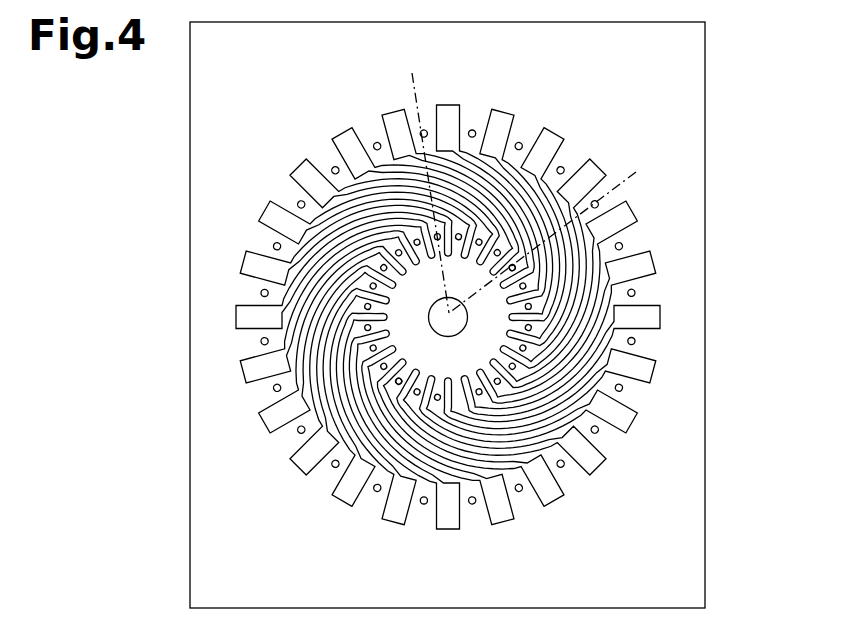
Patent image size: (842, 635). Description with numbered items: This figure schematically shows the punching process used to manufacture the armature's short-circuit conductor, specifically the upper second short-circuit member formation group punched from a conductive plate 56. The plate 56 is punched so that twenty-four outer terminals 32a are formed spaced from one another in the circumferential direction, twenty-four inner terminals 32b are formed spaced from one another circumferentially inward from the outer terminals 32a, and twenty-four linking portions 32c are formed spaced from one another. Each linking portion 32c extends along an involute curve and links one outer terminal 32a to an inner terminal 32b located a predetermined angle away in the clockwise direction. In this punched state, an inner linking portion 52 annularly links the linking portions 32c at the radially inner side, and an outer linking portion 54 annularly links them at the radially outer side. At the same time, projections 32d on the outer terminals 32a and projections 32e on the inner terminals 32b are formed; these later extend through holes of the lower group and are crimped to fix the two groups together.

The outer terminal 32a is at (586, 181).
The inner terminal 32b is at (437, 241).
The linking portion 32c is at (510, 186).
The projection 32d is at (472, 130).
The projection 32e is at (510, 270).
The inner linking portion 52 is at (478, 374).
The outer linking portion 54 is at (662, 102).
The conductive plate 56 is at (705, 71).